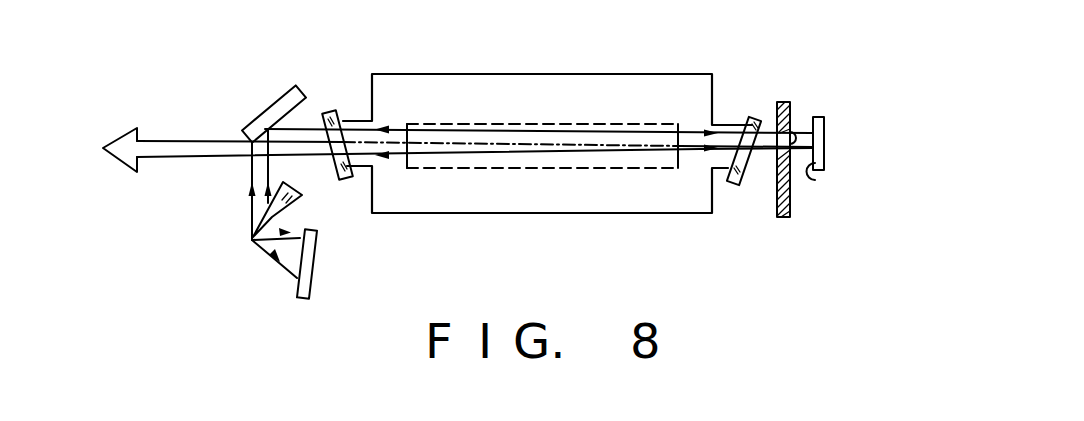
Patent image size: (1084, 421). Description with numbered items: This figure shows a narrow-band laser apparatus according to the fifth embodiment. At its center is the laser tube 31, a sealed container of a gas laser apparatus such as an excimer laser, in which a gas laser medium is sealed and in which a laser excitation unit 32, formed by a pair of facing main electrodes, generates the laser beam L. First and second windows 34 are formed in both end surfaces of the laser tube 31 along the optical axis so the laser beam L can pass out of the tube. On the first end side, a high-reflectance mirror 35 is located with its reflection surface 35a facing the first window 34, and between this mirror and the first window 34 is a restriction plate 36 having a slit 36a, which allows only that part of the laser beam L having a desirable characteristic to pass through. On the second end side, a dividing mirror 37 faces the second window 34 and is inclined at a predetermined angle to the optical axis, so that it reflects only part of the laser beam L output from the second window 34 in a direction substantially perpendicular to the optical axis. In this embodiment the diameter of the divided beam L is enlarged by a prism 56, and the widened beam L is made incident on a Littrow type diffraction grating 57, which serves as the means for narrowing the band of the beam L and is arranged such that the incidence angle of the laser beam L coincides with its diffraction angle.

The laser tube 31 is at (450, 73).
The laser excitation unit 32 is at (588, 125).
The windows 34 is at (330, 110).
The high-reflectance mirror 35 is at (827, 138).
The reflection surface 35a is at (816, 179).
The restriction plate 36 is at (790, 193).
The slit 36a is at (797, 133).
The dividing mirror 37 is at (277, 102).
The prism 56 is at (297, 197).
The Littrow type diffraction grating 57 is at (320, 272).
The laser beam L is at (185, 155).